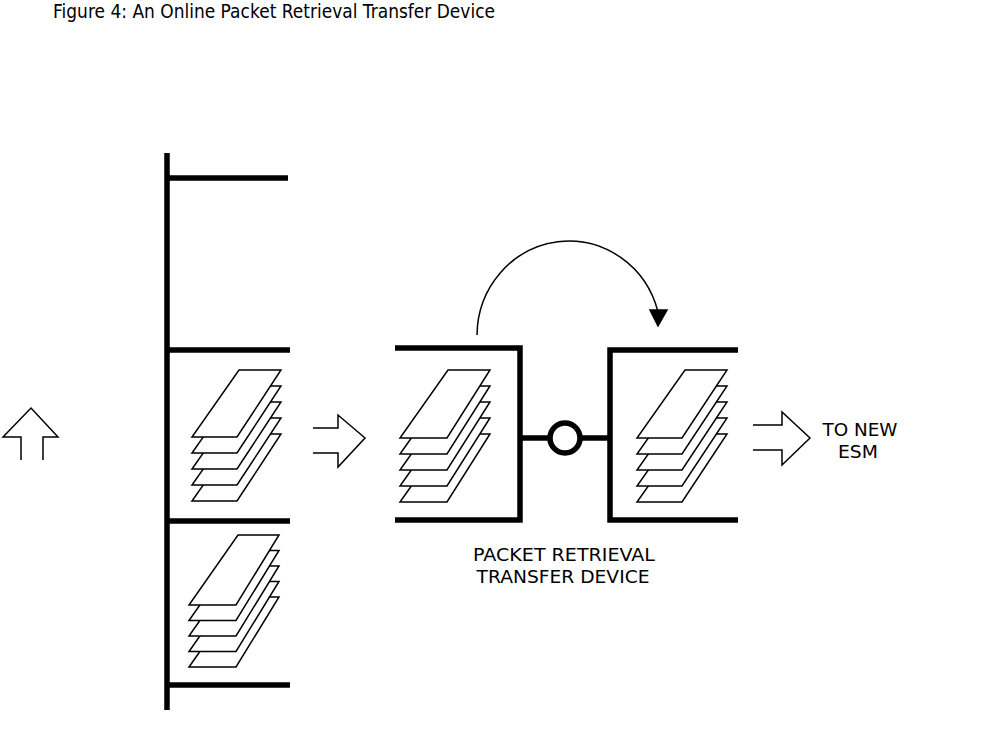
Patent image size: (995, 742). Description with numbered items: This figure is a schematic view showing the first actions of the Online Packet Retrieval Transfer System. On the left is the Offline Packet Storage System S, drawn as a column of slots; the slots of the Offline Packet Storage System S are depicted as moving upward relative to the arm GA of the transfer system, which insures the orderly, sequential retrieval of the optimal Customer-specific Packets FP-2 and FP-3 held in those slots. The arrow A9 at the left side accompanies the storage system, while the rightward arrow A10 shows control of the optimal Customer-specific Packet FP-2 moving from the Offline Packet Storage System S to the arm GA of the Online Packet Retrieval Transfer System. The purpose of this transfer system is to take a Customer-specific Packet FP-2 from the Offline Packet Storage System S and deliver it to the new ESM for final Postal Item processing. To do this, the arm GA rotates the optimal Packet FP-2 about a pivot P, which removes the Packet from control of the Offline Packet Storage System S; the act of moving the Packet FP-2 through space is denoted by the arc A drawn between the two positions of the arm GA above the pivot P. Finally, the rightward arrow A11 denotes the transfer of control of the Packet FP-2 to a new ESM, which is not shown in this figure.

The Offline Packet Storage System S is at (181, 414).
The Customer-specific Packet FP-2 is at (459, 436).
The Customer-specific Packet FP-3 is at (234, 601).
The input arrow to packet storage device A9 is at (30, 434).
The rightward arrow A10 is at (338, 441).
The rightward arrow A11 is at (780, 438).
The arm GA is at (566, 424).
The pivot P is at (565, 424).
The arc A is at (572, 274).